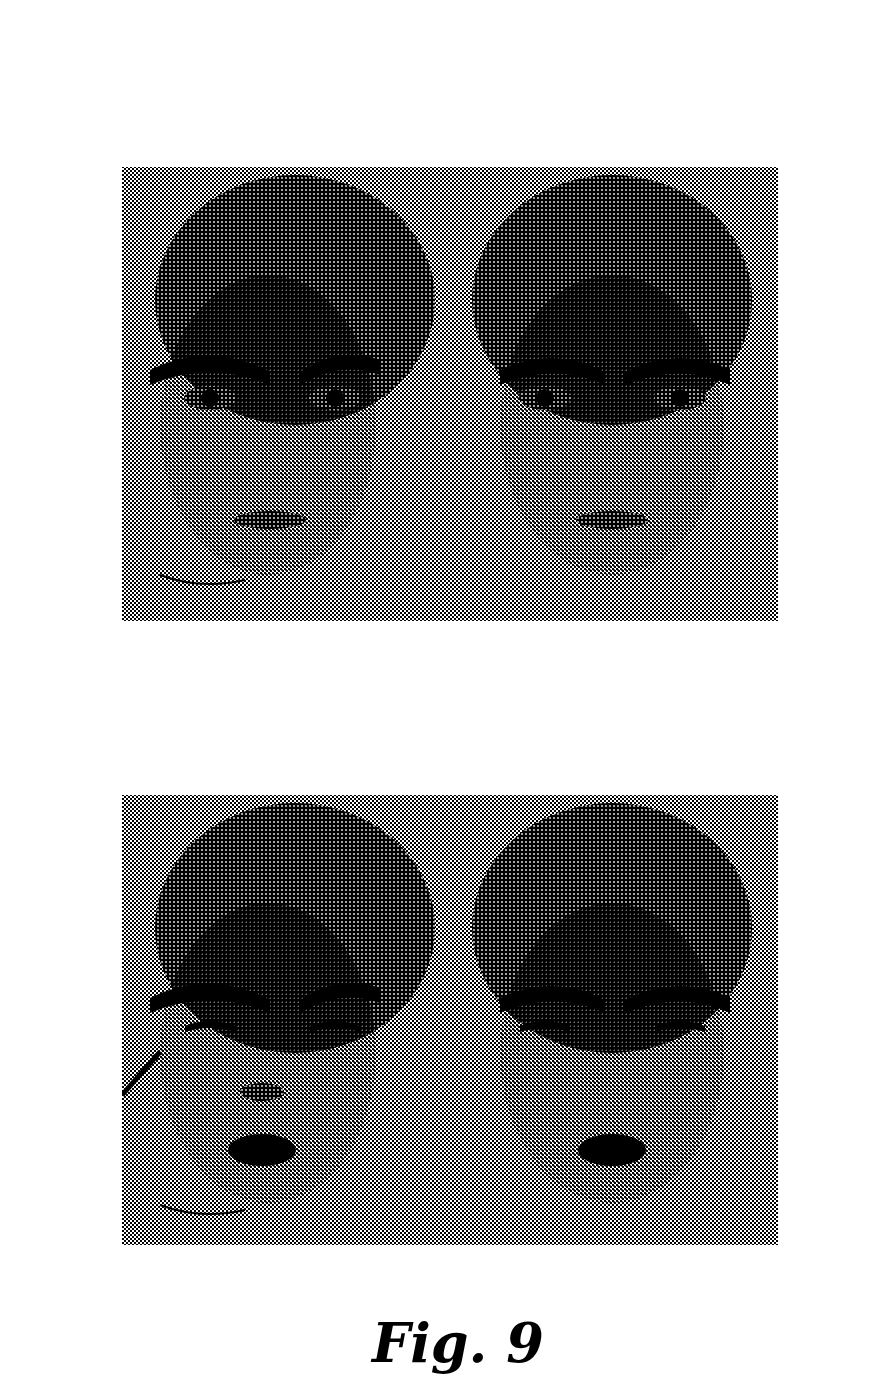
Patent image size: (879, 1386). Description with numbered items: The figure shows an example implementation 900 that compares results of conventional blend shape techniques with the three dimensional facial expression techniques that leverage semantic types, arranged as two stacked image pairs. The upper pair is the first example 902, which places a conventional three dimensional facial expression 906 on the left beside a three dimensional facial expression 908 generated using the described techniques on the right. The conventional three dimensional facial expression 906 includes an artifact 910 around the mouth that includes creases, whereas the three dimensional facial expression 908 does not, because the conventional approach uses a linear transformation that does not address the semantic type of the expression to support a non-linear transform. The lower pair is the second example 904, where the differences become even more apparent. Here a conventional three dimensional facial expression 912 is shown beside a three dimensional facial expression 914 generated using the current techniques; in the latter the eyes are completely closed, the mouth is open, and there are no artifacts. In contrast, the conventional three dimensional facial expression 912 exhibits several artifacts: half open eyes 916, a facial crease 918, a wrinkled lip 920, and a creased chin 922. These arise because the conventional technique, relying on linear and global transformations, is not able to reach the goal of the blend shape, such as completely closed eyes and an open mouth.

The example implementation 900 is at (143, 64).
The first example 902 is at (126, 135).
The second example 904 is at (140, 782).
The conventional three dimensional facial expression 906 is at (140, 314).
The three dimensional facial expression 908 is at (760, 306).
The artifact 910 is at (200, 578).
The conventional three dimensional facial expression 912 is at (145, 950).
The three dimensional facial expression 914 is at (760, 930).
The half open eyes 916 is at (119, 1088).
The facial crease 918 is at (189, 1171).
The wrinkled lip 920 is at (270, 1095).
The creased chin 922 is at (202, 1241).